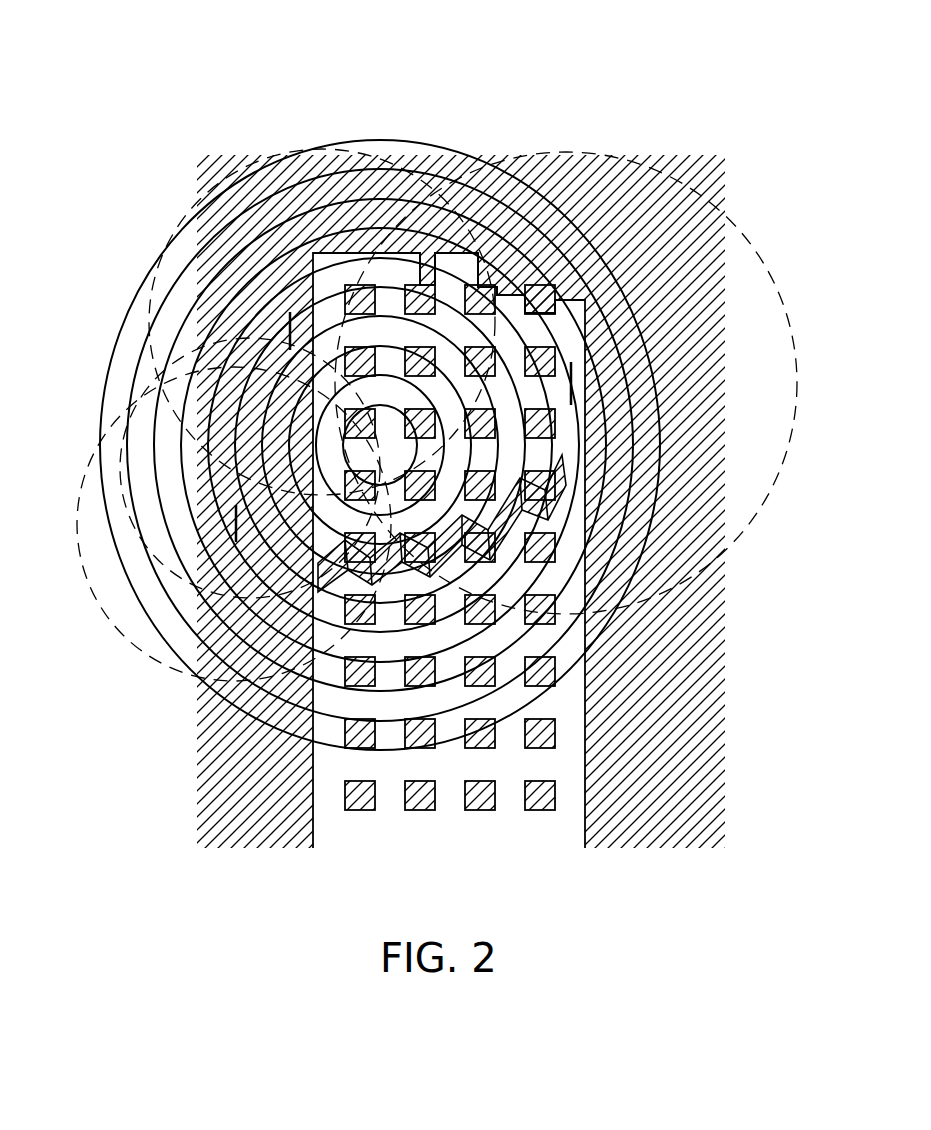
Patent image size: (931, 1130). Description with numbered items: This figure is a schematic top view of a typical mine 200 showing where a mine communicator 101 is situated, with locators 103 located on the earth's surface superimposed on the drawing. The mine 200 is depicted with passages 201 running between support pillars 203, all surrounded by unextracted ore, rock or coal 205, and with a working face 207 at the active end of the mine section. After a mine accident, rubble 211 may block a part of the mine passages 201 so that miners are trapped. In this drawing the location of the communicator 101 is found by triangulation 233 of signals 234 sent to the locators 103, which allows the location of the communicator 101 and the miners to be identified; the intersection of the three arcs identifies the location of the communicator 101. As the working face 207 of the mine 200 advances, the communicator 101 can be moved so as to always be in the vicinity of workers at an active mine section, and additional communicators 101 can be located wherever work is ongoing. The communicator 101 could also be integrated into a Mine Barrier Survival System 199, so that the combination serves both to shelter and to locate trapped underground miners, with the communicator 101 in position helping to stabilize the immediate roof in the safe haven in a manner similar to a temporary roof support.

The mine 200 is at (432, 456).
The mine communicator 101 is at (388, 462).
The locators 103 is at (288, 337).
The Mine Barrier Survival System 199 is at (392, 403).
The passages 201 is at (365, 830).
The support pillars 203 is at (527, 748).
The unextracted ore, rock or coal 205 is at (695, 640).
The working face 207 is at (543, 262).
The rubble 211 is at (567, 475).
The triangulation 233 is at (192, 207).
The signals 234 is at (150, 378).